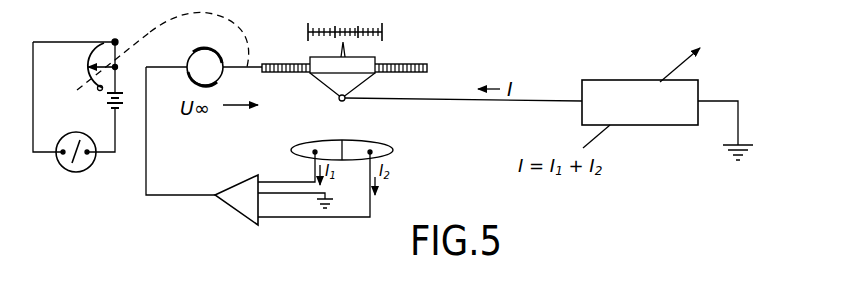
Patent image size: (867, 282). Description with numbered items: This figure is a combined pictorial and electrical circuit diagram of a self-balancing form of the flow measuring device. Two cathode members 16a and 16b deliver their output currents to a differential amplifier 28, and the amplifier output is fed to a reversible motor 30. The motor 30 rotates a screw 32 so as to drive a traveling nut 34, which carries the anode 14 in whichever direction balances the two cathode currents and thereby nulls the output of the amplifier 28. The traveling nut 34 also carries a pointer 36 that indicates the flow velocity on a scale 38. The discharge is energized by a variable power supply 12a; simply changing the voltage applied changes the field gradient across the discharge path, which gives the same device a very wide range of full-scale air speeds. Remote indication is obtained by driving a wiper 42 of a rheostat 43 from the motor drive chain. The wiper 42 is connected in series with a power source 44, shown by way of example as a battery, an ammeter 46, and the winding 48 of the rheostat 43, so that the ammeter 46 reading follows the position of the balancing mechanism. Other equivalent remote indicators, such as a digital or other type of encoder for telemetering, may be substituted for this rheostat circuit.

The variable power supply 12a is at (603, 80).
The anode 14 is at (338, 100).
The cathode member 16a is at (310, 143).
The cathode member 16b is at (387, 143).
The differential amplifier 28 is at (228, 207).
The reversible motor 30 is at (212, 39).
The screw 32 is at (418, 63).
The traveling nut 34 is at (368, 82).
The pointer 36 is at (338, 53).
The scale 38 is at (383, 32).
The wiper 42 is at (90, 88).
The rheostat 43 is at (82, 33).
The power source 44 is at (128, 113).
The ammeter 46 is at (72, 171).
The winding 48 is at (80, 58).